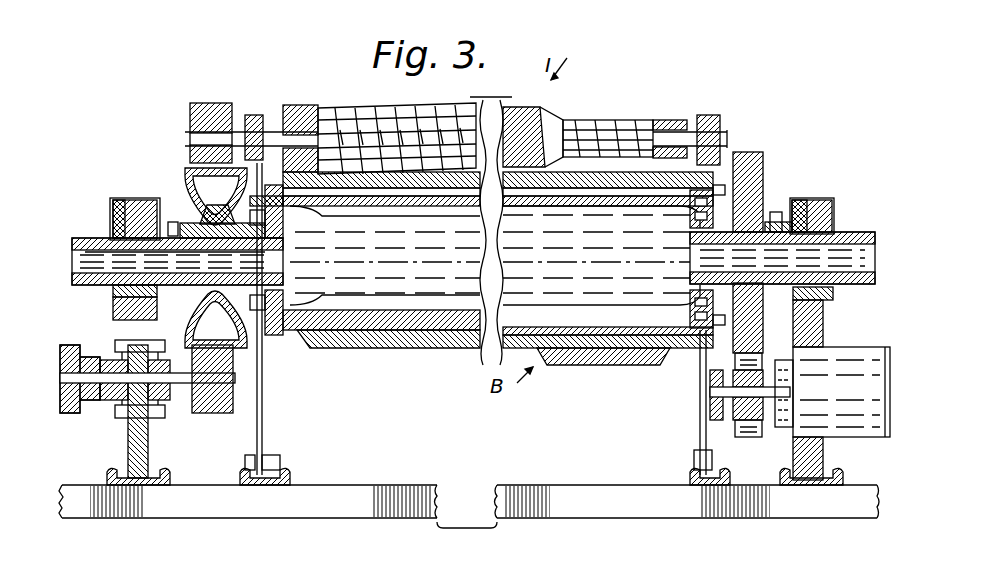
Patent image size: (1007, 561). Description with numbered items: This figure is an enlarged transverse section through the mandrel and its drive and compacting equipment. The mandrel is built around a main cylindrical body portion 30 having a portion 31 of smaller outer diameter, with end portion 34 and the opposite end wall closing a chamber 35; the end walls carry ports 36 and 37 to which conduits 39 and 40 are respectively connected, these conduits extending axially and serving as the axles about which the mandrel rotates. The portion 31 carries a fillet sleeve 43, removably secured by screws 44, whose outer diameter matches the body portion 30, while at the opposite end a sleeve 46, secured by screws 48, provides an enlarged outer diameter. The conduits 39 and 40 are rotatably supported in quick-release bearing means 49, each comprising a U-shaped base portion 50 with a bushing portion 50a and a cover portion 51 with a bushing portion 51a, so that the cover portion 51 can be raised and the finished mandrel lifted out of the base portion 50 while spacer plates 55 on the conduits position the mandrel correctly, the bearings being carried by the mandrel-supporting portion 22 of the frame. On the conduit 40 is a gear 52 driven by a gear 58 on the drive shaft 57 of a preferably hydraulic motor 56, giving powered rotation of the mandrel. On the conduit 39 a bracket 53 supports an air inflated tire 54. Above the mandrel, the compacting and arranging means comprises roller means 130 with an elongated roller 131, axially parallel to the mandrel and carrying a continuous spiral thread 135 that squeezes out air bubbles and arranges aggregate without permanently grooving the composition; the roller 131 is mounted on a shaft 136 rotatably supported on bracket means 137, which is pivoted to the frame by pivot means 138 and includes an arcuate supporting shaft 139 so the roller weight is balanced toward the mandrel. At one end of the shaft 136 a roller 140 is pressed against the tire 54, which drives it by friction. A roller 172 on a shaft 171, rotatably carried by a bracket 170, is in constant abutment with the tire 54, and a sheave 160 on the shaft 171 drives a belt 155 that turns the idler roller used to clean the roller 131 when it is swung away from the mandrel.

The mandrel-supporting portion 22 is at (513, 489).
The main cylindrical body portion 30 is at (416, 198).
The portion of smaller outer diameter 31 is at (357, 204).
The end portion 34 is at (688, 225).
The chamber 35 is at (442, 322).
The port 36 is at (277, 247).
The port 37 is at (688, 255).
The conduit 39 is at (88, 240).
The conduit 40 is at (872, 215).
The fillet sleeve 43 is at (330, 310).
The screws 44 is at (285, 305).
The sleeve 46 is at (583, 180).
The screws 48 is at (690, 312).
The bearing means 49 is at (123, 152).
The U-shaped base portion 50 is at (118, 315).
The bushing portion 50a is at (138, 297).
The cover portion 51 is at (134, 200).
The bushing portion 51a is at (116, 207).
The gear 52 is at (757, 178).
The bracket 53 is at (183, 218).
The air inflated tire 54 is at (184, 172).
The spacer plates 55 is at (226, 248).
The motor 56 is at (860, 440).
The drive shaft 57 is at (790, 395).
The gear 58 is at (750, 432).
The roller means 130 is at (557, 104).
The elongated roller 131 is at (416, 118).
The continuous spiral thread 135 is at (350, 122).
The shaft 136 is at (722, 141).
The bracket means 137 is at (306, 437).
The pivot means 138 is at (272, 459).
The arcuate supporting shaft 139 is at (263, 405).
The roller 140 is at (221, 104).
The belt 155 is at (72, 410).
The sheave 160 is at (58, 360).
The bracket 170 is at (140, 440).
The shaft 171 is at (232, 378).
The roller 172 is at (215, 412).